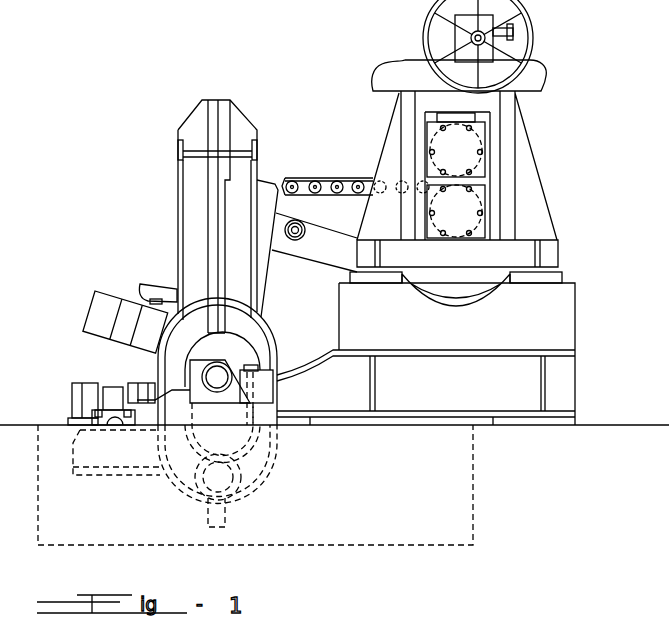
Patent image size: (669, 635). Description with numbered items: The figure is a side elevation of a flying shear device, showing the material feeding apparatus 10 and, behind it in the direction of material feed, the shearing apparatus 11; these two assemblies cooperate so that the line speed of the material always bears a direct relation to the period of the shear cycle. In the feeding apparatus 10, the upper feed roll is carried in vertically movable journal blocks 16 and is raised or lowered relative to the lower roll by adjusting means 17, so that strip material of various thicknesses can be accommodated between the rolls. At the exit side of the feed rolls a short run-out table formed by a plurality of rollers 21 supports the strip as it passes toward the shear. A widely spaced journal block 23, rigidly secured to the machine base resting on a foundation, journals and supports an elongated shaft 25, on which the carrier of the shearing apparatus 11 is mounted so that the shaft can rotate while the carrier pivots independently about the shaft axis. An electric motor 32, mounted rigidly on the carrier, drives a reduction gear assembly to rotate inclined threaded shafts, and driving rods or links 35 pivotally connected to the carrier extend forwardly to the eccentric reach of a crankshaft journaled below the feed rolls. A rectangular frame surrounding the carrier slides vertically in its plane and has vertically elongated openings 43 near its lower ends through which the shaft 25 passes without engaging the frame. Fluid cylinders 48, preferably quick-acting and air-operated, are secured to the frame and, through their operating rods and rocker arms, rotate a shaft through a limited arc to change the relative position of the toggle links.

The material feeding apparatus 10 is at (464, 334).
The shearing apparatus 11 is at (200, 283).
The journal blocks 16 is at (483, 133).
The adjusting means 17 is at (533, 38).
The rollers 21 is at (322, 176).
The journal block 23 is at (255, 402).
The shaft 25 is at (218, 378).
The electric motor 32 is at (96, 303).
The driving rods or links 35 is at (312, 240).
The vertically elongated openings 43 is at (230, 347).
The fluid cylinders 48 is at (84, 383).